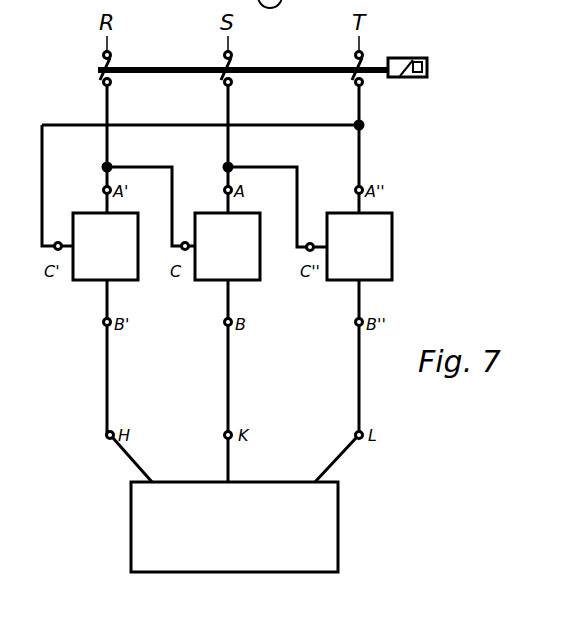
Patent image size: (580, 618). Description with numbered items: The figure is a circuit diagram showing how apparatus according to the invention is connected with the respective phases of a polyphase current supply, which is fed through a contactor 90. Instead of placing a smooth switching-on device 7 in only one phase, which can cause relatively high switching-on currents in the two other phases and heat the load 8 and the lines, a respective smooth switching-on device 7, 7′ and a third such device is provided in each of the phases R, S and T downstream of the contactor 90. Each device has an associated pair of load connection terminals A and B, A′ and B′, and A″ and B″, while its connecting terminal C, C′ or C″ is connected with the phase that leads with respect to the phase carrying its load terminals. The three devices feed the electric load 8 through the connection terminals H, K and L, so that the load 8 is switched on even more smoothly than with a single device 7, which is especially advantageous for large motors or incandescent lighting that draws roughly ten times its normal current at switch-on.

The contactor 90 is at (412, 78).
The smooth switching-on device 7 is at (252, 268).
The smooth switching-on device 7′ is at (126, 268).
The electric load 8 is at (153, 512).